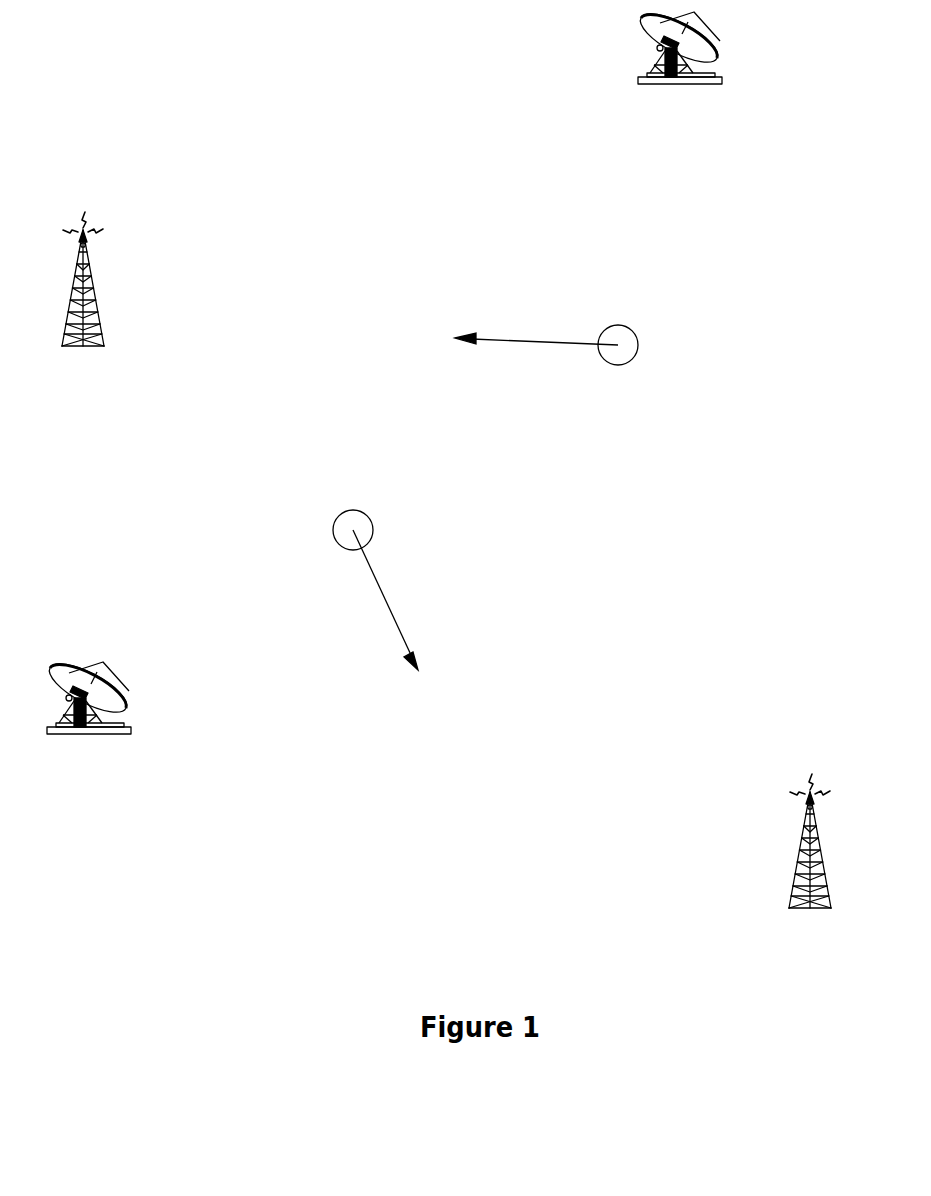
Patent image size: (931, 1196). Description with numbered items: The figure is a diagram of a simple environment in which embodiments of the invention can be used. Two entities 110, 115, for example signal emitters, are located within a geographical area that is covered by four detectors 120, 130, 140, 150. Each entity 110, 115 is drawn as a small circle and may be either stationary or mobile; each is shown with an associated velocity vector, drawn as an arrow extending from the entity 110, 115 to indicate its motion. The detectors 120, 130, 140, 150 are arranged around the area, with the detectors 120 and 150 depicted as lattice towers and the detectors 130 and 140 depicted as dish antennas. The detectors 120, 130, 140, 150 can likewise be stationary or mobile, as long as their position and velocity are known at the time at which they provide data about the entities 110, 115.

The entity 110 is at (372, 528).
The entity 115 is at (640, 348).
The detector 120 is at (84, 299).
The detector 130 is at (679, 61).
The detector 140 is at (88, 711).
The detector 150 is at (812, 858).